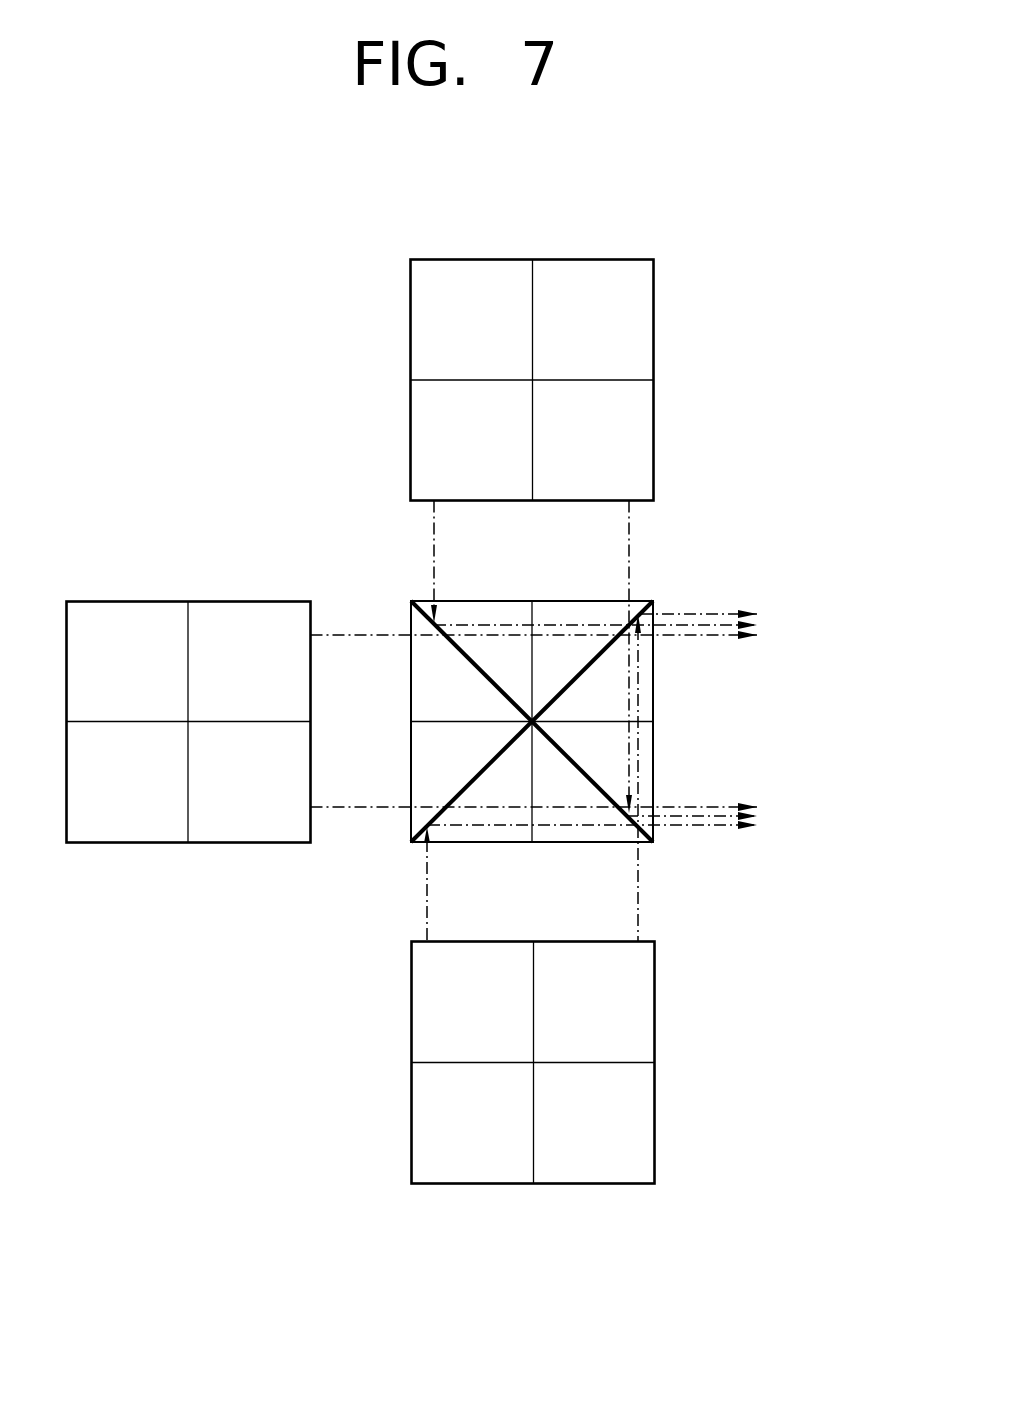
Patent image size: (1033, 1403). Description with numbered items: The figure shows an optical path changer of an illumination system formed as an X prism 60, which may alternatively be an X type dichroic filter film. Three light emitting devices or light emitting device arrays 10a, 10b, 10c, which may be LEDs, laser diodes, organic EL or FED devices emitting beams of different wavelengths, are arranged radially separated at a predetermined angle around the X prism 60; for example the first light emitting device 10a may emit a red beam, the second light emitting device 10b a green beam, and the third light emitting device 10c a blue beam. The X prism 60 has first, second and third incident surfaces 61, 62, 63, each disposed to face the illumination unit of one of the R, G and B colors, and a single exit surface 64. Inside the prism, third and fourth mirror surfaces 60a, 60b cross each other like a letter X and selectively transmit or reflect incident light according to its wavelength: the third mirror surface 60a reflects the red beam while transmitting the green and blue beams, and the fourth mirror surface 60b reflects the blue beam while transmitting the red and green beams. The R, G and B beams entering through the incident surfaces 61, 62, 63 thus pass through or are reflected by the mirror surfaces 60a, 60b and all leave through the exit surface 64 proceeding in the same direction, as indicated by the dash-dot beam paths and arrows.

The first light emitting device 10a is at (470, 268).
The second light emitting device 10b is at (127, 610).
The third light emitting device 10c is at (472, 1175).
The X prism 60 is at (549, 716).
The third mirror surface 60a is at (465, 652).
The fourth mirror surface 60b is at (462, 790).
The first incident surface 61 is at (573, 600).
The second incident surface 62 is at (410, 748).
The third incident surface 63 is at (583, 842).
The exit surface 64 is at (653, 698).